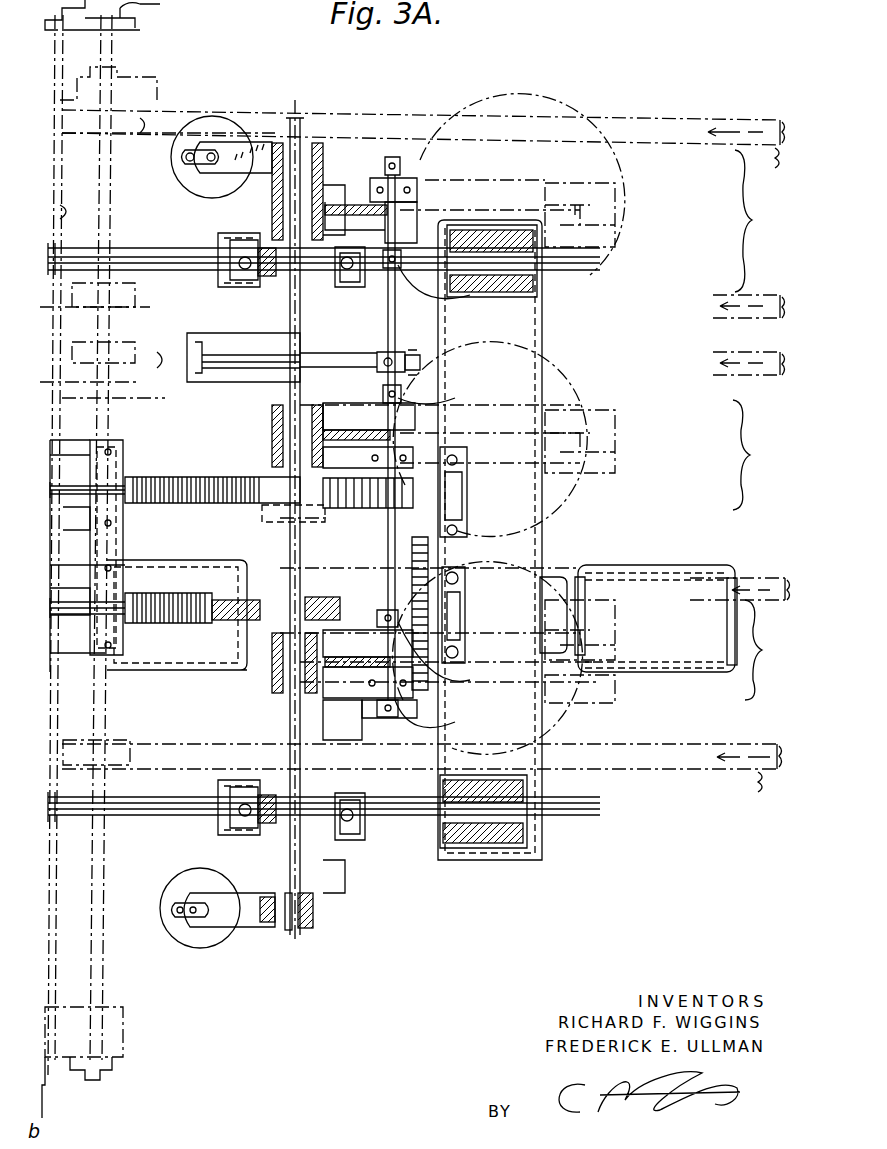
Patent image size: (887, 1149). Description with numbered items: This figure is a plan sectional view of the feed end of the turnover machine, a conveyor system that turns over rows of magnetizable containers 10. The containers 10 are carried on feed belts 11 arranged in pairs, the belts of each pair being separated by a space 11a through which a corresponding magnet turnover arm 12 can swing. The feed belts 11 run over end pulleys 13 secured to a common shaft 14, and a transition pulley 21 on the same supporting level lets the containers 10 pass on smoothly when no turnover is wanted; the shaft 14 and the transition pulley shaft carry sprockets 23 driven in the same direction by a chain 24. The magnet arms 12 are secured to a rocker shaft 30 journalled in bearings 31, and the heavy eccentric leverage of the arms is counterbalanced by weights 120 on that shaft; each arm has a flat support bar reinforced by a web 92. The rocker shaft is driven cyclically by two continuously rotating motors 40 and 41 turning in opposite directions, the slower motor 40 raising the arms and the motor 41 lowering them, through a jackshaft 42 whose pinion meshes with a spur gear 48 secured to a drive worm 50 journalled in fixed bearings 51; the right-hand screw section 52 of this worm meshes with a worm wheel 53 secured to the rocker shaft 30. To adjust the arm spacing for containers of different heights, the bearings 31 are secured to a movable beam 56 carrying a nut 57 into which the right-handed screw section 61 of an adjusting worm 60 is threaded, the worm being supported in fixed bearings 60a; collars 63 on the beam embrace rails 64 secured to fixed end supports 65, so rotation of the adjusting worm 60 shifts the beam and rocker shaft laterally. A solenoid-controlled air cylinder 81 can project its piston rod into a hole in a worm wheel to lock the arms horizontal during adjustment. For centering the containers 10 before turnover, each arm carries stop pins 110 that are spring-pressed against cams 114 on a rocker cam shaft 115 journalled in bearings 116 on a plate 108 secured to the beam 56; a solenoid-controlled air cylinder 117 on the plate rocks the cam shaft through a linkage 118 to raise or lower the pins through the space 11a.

The containers 10 is at (596, 168).
The feed belts 11 is at (60, 138).
The space 11a is at (766, 425).
The magnet turnover arm 12 is at (616, 235).
The end pulleys 13 is at (142, 134).
The common shaft 14 is at (122, 72).
The transition pulley 21 is at (60, 213).
The sprockets 23 is at (130, 3).
The chain 24 is at (168, 3).
The rocker shaft 30 is at (292, 116).
The bearings 31 is at (248, 235).
The motor 40 is at (688, 674).
The motor 41 is at (178, 672).
The jackshaft 42 is at (555, 590).
The spur gear 48 is at (430, 560).
The drive worm 50 is at (148, 625).
The fixed bearings 51 is at (467, 598).
The right-hand screw section 52 is at (113, 660).
The worm wheel 53 is at (220, 623).
The movable beam 56 is at (270, 210).
The nut 57 is at (265, 514).
The adjusting worm 60 is at (205, 477).
The fixed bearings 60a is at (418, 522).
The right-handed screw section 61 is at (143, 478).
The collars 63 is at (222, 245).
The rails 64 is at (52, 262).
The fixed end supports 65 is at (536, 283).
The solenoid-controlled air cylinder 81 is at (270, 752).
The web 92 is at (356, 203).
The plate 108 is at (418, 216).
The stop pins 110 is at (386, 266).
The cams 114 is at (410, 158).
The rocker cam shaft 115 is at (400, 232).
The bearings 116 is at (402, 178).
The solenoid-controlled air cylinder 117 is at (212, 348).
The linkage 118 is at (420, 365).
The weights 120 is at (204, 118).